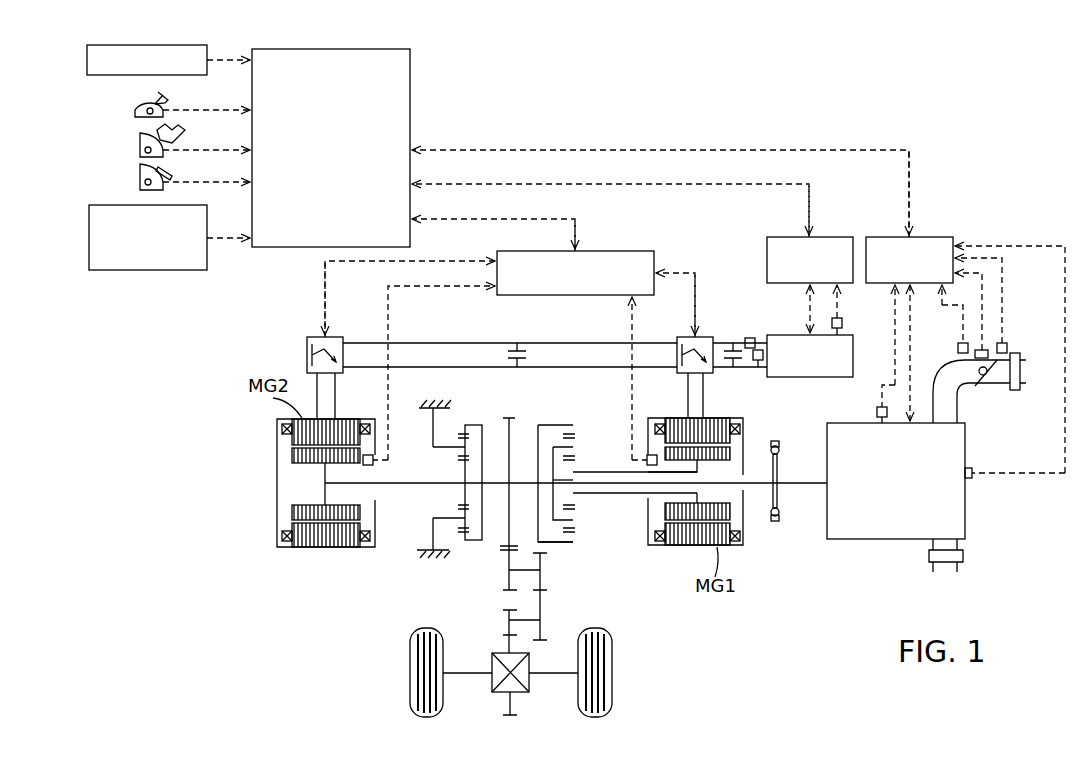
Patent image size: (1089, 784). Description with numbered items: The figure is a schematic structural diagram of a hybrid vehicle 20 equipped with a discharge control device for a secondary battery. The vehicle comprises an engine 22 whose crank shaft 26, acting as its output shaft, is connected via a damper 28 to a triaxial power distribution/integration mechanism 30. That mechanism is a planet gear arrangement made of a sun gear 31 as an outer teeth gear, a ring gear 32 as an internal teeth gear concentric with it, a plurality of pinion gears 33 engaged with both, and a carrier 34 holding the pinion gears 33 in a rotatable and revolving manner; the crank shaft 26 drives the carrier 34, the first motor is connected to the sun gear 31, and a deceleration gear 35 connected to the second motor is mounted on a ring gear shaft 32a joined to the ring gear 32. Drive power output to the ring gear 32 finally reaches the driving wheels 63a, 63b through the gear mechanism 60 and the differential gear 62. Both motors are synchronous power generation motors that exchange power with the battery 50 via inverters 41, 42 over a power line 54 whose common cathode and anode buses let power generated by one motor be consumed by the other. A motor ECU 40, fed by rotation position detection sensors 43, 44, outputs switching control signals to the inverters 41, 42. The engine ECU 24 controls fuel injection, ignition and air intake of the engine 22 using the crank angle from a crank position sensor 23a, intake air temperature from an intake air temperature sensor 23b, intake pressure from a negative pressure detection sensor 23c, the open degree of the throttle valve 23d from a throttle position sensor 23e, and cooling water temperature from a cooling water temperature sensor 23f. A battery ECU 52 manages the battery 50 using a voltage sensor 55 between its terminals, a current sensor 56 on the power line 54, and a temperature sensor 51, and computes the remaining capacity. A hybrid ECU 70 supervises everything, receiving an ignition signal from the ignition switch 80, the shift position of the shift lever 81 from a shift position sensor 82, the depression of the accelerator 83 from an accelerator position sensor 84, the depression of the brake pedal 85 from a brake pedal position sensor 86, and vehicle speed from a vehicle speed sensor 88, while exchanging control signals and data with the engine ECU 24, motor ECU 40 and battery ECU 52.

The hybrid vehicle 20 is at (737, 128).
The engine 22 is at (878, 540).
The crank position sensor 23a is at (972, 479).
The intake air temperature sensor 23b is at (1008, 348).
The negative pressure detection sensor 23c is at (958, 346).
The throttle valve 23d is at (973, 382).
The throttle position sensor 23e is at (987, 350).
The cooling water temperature sensor 23f is at (877, 412).
The engine electronic control unit 24 is at (940, 237).
The crank shaft 26 is at (806, 483).
The damper 28 is at (775, 520).
The power distribution/integration mechanism 30 is at (615, 465).
The sun gear 31 is at (573, 495).
The ring gear 32 is at (573, 537).
The ring gear shaft 32a is at (496, 478).
The pinion gears 33 is at (573, 517).
The carrier 34 is at (548, 455).
The deceleration gear 35 is at (466, 410).
The motor electronic control unit 40 is at (626, 251).
The inverter 41 is at (709, 337).
The inverter 42 is at (340, 337).
The rotation position detection sensor 43 is at (632, 463).
The rotation position detection sensor 44 is at (392, 461).
The battery 50 is at (812, 378).
The temperature sensor 51 is at (842, 323).
The battery electronic control unit 52 is at (781, 237).
The power line 54 is at (564, 367).
The voltage sensor 55 is at (755, 361).
The current sensor 56 is at (752, 338).
The gear mechanism 60 is at (571, 602).
The differential gear 62 is at (532, 684).
The driving wheel 63a is at (410, 697).
The driving wheel 63b is at (612, 697).
The hybrid electronic control unit 70 is at (412, 60).
The ignition switch 80 is at (87, 62).
The shift lever 81 is at (152, 97).
The shift position sensor 82 is at (135, 110).
The accelerator 83 is at (156, 133).
The accelerator position sensor 84 is at (140, 150).
The brake pedal 85 is at (148, 167).
The brake pedal position sensor 86 is at (140, 185).
The vehicle speed sensor 88 is at (89, 240).